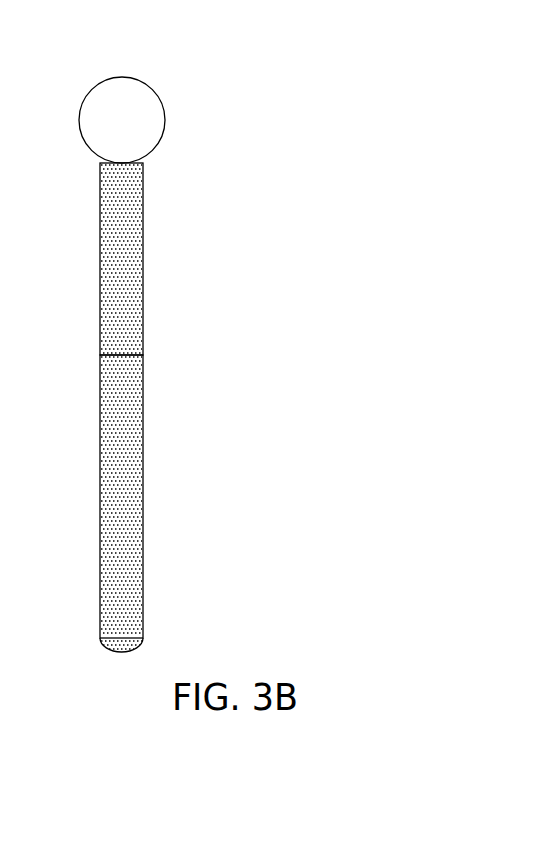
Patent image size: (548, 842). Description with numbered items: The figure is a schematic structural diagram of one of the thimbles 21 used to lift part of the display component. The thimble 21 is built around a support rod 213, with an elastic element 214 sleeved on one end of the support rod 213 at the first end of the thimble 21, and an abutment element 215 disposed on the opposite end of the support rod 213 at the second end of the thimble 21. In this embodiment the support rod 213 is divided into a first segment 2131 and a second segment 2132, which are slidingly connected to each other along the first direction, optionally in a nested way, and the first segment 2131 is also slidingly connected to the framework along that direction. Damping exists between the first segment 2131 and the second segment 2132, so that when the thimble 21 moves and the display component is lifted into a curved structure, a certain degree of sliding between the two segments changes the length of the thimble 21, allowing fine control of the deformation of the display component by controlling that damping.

The thimble 21 is at (141, 42).
The elastic element 214 is at (165, 128).
The support rod 213 is at (256, 400).
The second segment 2132 is at (143, 310).
The first segment 2131 is at (143, 433).
The abutment element 215 is at (140, 645).